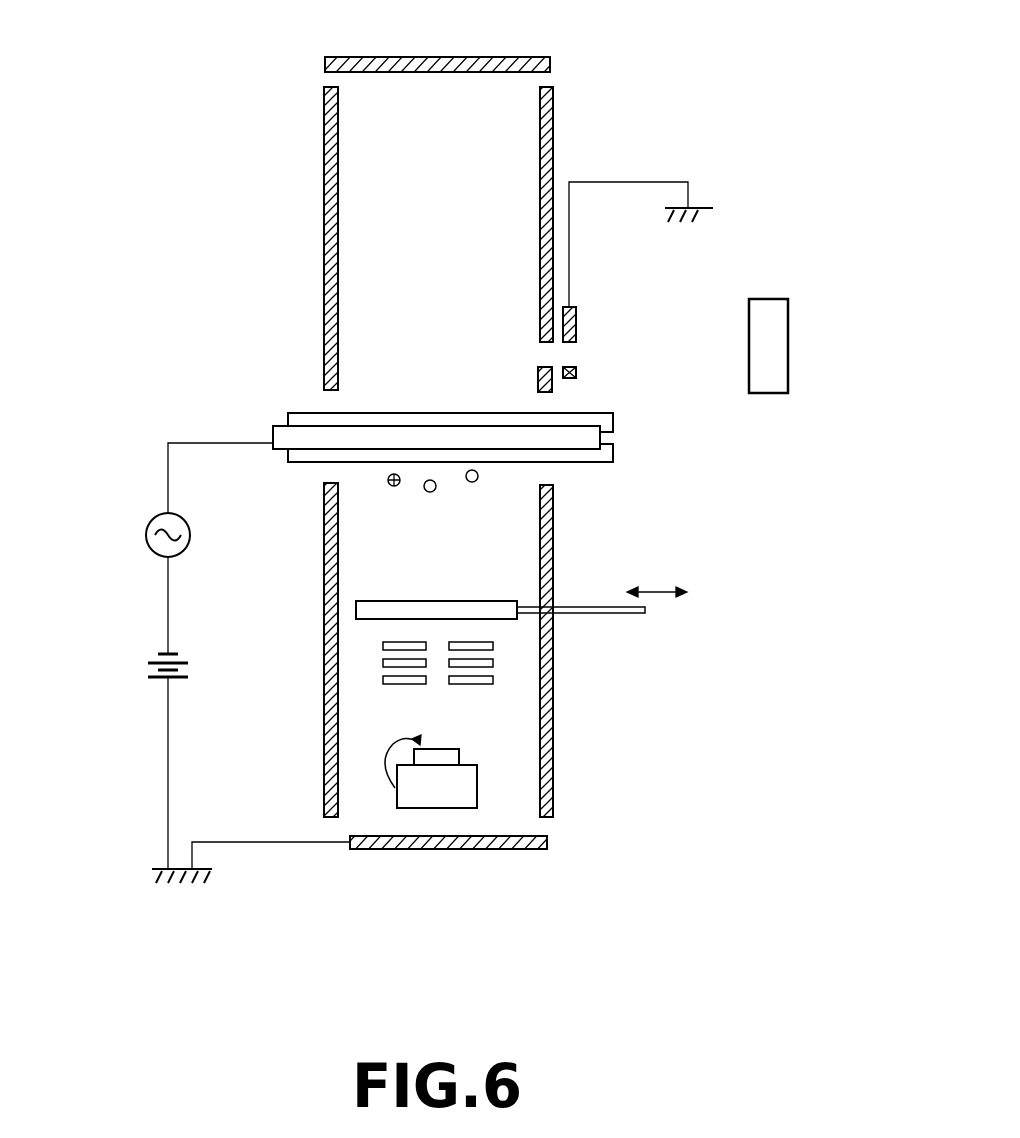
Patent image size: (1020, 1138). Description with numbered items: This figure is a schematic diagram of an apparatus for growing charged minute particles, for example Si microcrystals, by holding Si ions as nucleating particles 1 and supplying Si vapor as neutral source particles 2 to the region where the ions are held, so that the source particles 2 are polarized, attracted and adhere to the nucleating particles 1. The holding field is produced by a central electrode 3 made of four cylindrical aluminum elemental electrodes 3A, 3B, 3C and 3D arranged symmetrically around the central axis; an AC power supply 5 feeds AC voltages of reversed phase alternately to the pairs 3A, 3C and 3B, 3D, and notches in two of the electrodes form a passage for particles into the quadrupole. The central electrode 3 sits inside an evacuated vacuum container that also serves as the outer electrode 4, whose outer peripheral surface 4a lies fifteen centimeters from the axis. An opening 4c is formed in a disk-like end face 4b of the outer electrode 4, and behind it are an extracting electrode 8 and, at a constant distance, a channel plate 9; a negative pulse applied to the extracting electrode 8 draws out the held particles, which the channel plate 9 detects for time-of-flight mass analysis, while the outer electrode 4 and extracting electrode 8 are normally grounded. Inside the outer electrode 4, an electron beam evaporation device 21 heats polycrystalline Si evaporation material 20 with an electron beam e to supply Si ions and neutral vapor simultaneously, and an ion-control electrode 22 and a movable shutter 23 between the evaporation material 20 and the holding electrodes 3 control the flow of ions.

The nucleating particles 1 is at (388, 487).
The source particles 2 is at (429, 492).
The central electrode 3 is at (626, 410).
The elemental electrode 3A is at (285, 413).
The elemental electrode 3B is at (275, 436).
The elemental electrode 3C is at (288, 462).
The elemental electrode 3D is at (436, 437).
The outer electrode 4 is at (645, 15).
The outer peripheral surface 4a is at (550, 60).
The disk-like end face 4b is at (553, 120).
The opening 4c is at (537, 361).
The AC power supply 5 is at (148, 548).
The extracting electrode 8 is at (577, 330).
The channel plate 9 is at (770, 299).
The evaporation material 20 is at (445, 749).
The electron beam evaporation device 21 is at (477, 787).
The ion-control electrode 22 is at (506, 638).
The movable shutter 23 is at (462, 605).
The electron e is at (392, 752).